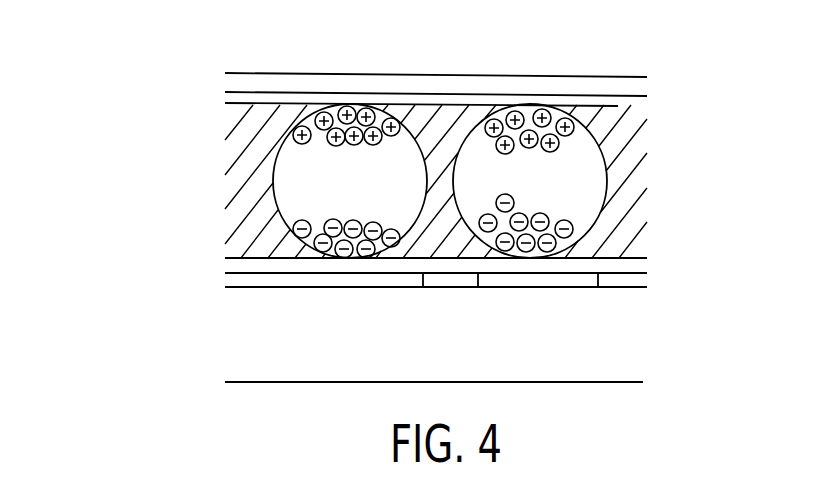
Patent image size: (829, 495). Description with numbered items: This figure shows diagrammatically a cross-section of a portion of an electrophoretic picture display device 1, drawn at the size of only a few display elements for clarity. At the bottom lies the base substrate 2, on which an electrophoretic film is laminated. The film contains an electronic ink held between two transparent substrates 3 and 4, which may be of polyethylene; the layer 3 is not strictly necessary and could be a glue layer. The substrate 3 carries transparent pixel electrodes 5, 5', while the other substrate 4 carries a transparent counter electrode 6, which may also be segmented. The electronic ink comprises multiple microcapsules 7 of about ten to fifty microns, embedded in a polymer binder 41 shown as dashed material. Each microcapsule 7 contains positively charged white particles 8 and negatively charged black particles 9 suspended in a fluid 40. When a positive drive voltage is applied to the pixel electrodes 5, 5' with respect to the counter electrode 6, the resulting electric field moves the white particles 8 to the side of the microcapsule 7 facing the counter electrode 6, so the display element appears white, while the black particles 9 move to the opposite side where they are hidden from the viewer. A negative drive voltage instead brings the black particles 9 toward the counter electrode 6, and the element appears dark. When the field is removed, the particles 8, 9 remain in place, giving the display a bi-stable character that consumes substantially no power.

The picture display device 1 is at (117, 345).
The base substrate 2 is at (585, 349).
The transparent substrate 3 is at (590, 267).
The transparent substrate 4 is at (617, 101).
The pixel electrode 5 is at (535, 303).
The pixel electrode 5' is at (324, 303).
The counter electrode 6 is at (573, 92).
The microcapsule 7 is at (274, 177).
The positively charged white particles 8 is at (355, 108).
The negatively charged black particles 9 is at (292, 221).
The fluid 40 is at (351, 181).
The polymer binder 41 is at (636, 157).